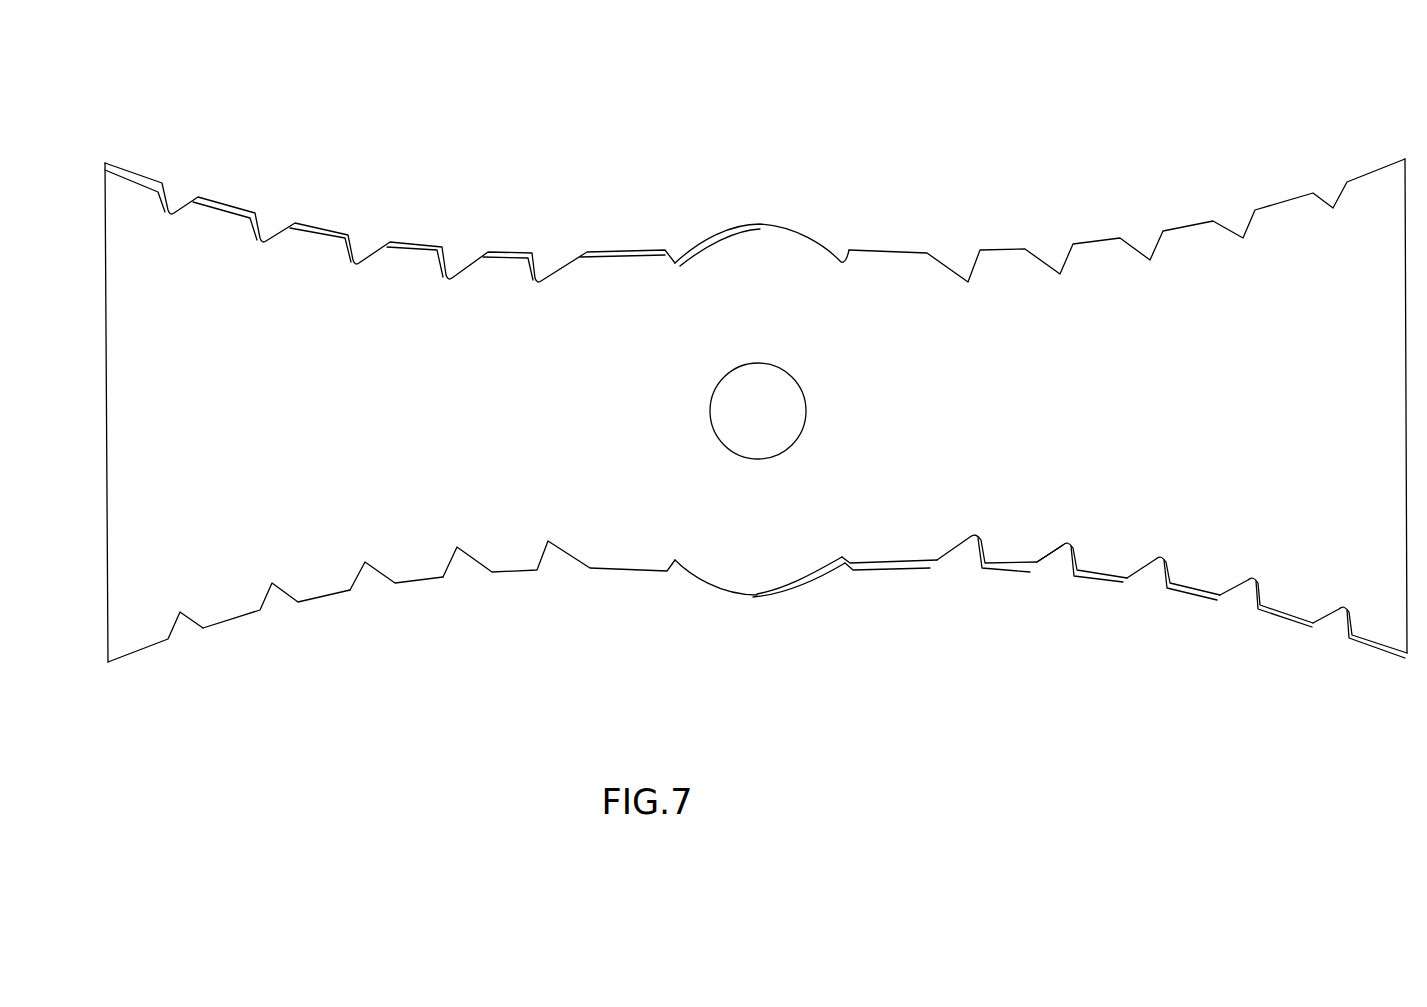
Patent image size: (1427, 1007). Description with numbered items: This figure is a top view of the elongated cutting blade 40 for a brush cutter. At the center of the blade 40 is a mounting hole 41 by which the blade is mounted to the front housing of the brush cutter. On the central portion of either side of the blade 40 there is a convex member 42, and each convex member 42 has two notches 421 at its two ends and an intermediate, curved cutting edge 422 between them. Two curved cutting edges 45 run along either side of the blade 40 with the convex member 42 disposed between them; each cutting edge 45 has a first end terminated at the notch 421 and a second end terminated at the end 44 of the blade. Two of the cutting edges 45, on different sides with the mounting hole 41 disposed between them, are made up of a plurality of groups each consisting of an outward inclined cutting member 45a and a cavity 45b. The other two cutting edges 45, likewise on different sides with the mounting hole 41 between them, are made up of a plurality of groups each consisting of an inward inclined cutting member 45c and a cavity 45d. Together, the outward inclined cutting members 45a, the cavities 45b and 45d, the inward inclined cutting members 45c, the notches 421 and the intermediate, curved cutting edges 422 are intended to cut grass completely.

The elongated cutting blade 40 is at (167, 498).
The mounting hole 41 is at (795, 407).
The convex member 42 is at (773, 225).
The notch 421 is at (842, 562).
The intermediate, curved cutting edge 422 is at (792, 592).
The end 44 is at (1406, 333).
The curved cutting edge 45 is at (1105, 575).
The outward inclined cutting member 45a is at (1285, 613).
The cavity 45b is at (965, 550).
The inward inclined cutting member 45c is at (418, 582).
The cavity 45d is at (280, 595).